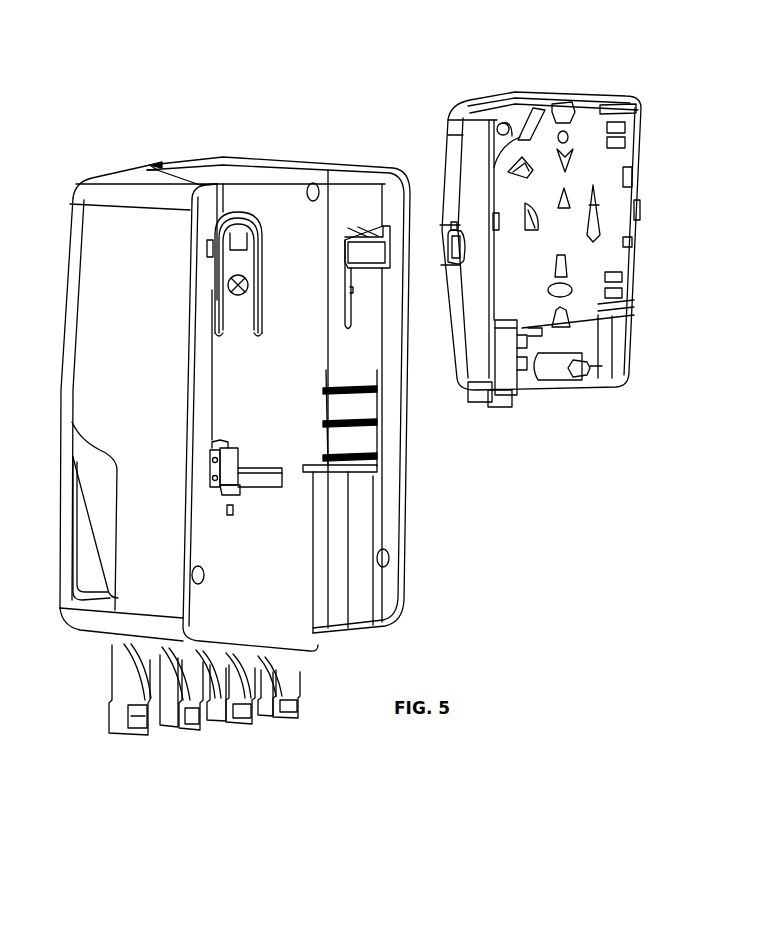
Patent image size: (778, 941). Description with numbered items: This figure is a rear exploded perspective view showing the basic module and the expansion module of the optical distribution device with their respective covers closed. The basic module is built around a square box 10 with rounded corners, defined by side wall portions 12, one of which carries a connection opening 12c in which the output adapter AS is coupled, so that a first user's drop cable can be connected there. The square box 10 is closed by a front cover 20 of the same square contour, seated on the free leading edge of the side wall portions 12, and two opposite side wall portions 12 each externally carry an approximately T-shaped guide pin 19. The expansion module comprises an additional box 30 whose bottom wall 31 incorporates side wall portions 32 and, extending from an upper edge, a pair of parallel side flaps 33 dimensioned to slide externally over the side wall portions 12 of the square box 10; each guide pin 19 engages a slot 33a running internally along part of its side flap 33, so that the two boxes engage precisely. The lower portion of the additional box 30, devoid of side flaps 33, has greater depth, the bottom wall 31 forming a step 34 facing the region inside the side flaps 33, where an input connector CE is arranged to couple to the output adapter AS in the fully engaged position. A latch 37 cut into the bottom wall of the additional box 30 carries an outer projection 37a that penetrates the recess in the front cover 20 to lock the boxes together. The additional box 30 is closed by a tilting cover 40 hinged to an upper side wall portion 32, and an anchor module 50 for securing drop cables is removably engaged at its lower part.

The square box 10 is at (600, 90).
The side wall portions 12 is at (512, 100).
The connection opening 12c is at (518, 400).
The guide pin 19 is at (446, 252).
The front cover 20 is at (446, 130).
The additional box 30 is at (297, 160).
The bottom wall 31 is at (290, 395).
The side wall portions 32 is at (130, 170).
The side flaps 33 is at (218, 204).
The slot 33a is at (362, 245).
The step 34 is at (312, 470).
The latch 37 is at (232, 238).
The outer projection 37a is at (238, 298).
The tilting cover 40 is at (73, 190).
The anchor module 50 is at (238, 730).
The input connector CE is at (290, 448).
The output adapter AS is at (497, 410).